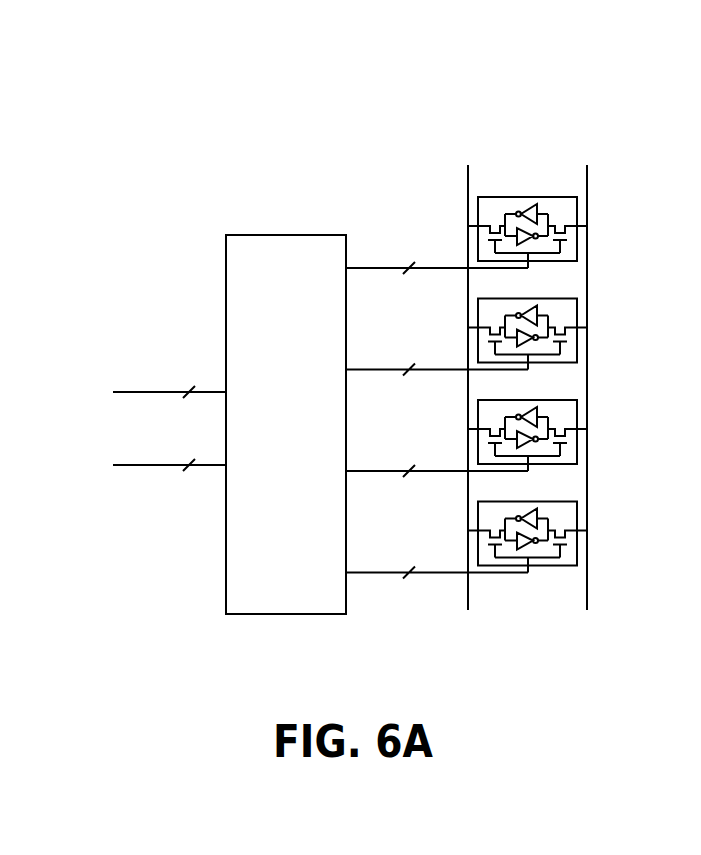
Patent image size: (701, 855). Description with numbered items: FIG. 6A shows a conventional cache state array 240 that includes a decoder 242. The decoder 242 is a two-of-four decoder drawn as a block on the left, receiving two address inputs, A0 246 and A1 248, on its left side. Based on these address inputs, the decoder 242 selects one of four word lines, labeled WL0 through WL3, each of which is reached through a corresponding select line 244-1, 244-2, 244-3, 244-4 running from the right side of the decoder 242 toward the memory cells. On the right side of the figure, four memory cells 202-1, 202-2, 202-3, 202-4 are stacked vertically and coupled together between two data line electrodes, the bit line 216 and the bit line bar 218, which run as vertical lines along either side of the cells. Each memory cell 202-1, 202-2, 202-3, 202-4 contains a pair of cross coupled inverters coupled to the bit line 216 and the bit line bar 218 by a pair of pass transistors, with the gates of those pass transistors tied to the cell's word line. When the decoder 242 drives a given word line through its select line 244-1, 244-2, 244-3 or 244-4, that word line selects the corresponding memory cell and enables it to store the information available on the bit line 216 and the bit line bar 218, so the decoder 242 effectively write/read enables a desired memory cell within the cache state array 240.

The cache state array 240 is at (393, 144).
The decoder 242 is at (320, 616).
The address input A0 246 is at (169, 391).
The address input A1 248 is at (169, 479).
The select line 244-1 is at (437, 271).
The select line 244-2 is at (437, 373).
The select line 244-3 is at (437, 474).
The select line 244-4 is at (437, 576).
The memory cell 202-1 is at (577, 210).
The memory cell 202-2 is at (560, 325).
The memory cell 202-3 is at (560, 426).
The memory cell 202-4 is at (560, 528).
The bit line 216 is at (475, 648).
The bit line bar 218 is at (598, 648).